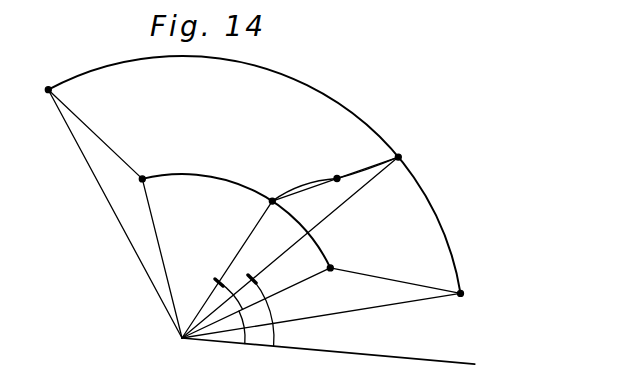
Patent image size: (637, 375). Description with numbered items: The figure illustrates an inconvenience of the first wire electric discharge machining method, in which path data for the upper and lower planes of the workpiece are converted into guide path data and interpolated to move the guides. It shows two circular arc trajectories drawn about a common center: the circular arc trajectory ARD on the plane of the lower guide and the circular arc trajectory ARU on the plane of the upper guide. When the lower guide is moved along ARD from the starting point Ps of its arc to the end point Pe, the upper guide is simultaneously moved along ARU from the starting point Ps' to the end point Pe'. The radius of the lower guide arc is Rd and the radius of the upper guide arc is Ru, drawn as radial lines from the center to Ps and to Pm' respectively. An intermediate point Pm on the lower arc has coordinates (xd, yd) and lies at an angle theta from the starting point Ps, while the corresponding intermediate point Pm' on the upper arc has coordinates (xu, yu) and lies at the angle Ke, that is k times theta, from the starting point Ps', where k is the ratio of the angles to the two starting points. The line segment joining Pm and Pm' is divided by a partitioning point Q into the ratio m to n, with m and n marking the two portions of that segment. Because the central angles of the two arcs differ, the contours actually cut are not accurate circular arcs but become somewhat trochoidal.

The circular arc trajectory on the plane of the lower guide ARD is at (311, 90).
The circular arc trajectory on the plane of the upper guide ARU is at (197, 176).
The end point of the lower guide circular arc Pe is at (103, 204).
The end point of the upper guide circular arc Pe' is at (115, 214).
The intermediate point of the lower guide Pm is at (334, 242).
The intermediate point of the upper guide Pm' is at (223, 208).
The starting point of the lower guide circular arc Ps is at (408, 290).
The starting point of the upper guide circular arc Ps' is at (266, 301).
The partitioning point Q is at (335, 179).
The partition ratio component n is at (304, 181).
The partition ratio component m is at (367, 160).
The radius of the upper guide circular arc Ru is at (227, 269).
The radius of the lower guide circular arc Rd is at (321, 315).
The angle k·θ from the starting point Ps' Ke is at (231, 289).